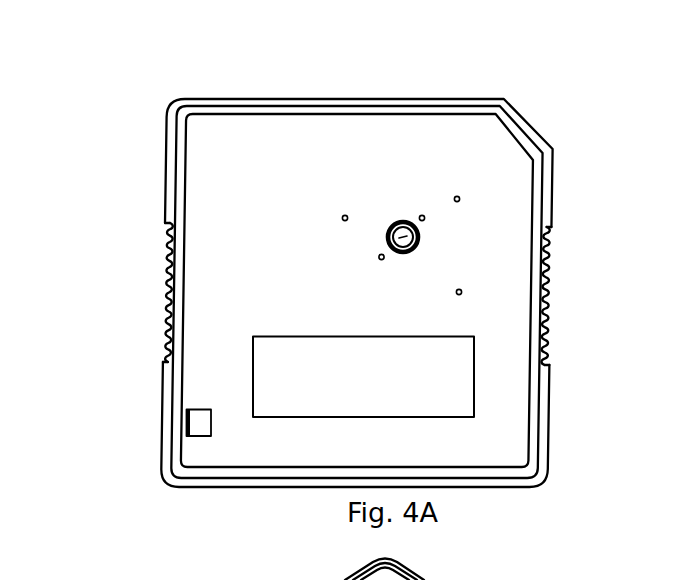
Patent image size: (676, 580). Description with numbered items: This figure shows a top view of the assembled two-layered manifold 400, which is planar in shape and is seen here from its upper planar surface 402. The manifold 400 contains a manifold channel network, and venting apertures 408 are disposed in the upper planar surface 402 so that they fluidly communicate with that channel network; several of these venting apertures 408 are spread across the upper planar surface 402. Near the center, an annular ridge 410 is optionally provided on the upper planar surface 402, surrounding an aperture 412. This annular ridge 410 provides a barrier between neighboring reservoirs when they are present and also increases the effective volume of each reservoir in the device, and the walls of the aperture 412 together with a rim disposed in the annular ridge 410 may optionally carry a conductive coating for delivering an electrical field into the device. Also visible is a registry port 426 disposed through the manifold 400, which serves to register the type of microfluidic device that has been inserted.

The manifold 400 is at (150, 105).
The upper planar surface 402 is at (502, 442).
The venting apertures 408 is at (421, 215).
The annular ridge 410 is at (418, 245).
The aperture 412 is at (403, 237).
The registry port 426 is at (196, 425).